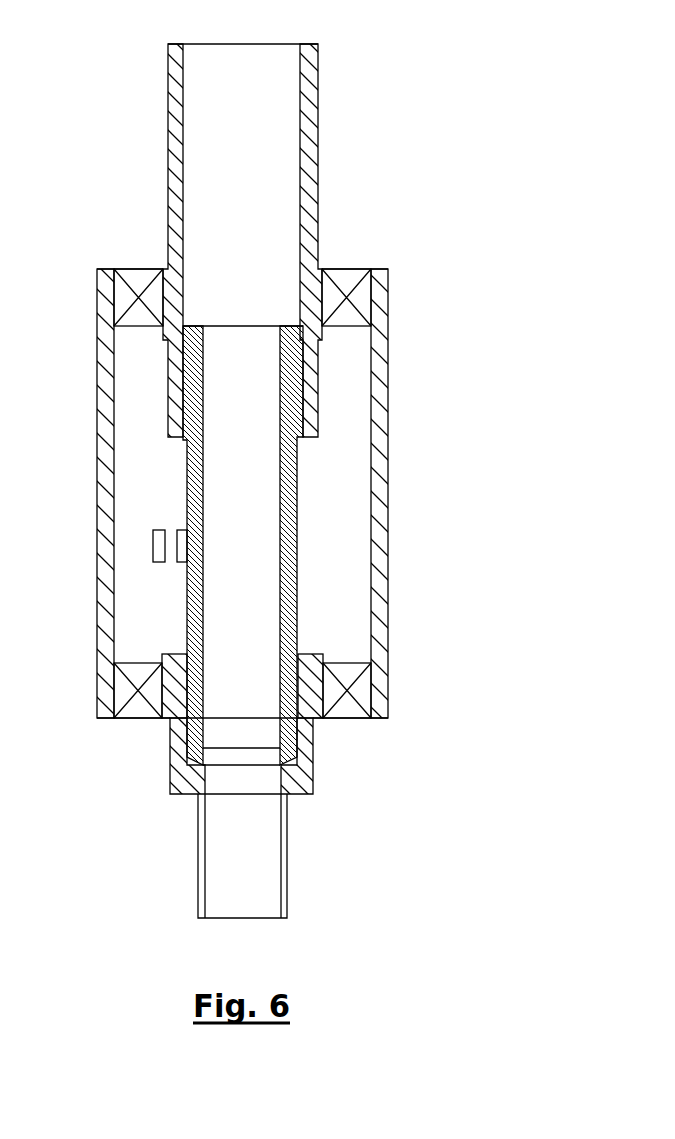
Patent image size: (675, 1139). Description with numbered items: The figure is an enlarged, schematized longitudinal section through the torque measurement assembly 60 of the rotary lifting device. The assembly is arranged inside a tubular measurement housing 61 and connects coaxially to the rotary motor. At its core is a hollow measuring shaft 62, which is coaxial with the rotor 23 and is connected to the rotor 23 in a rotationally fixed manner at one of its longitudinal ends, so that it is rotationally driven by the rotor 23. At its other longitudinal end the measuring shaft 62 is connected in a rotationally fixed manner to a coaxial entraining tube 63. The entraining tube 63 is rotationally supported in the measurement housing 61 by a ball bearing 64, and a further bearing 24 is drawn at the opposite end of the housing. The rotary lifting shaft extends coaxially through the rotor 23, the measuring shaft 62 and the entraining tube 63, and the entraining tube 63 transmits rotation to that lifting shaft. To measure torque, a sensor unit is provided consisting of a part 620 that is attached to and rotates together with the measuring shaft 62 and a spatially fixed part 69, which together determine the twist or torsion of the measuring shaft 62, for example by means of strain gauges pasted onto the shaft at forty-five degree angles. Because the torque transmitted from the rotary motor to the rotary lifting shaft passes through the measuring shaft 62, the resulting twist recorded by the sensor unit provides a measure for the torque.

The torque measurement assembly 60 is at (352, 232).
The tubular measurement housing 61 is at (383, 428).
The measuring shaft 62 is at (297, 542).
The entraining tube 63 is at (312, 138).
The ball bearing 64 is at (358, 298).
The lower bearing 24 is at (360, 687).
The rotor 23 is at (287, 838).
The spatially fixed part 69 is at (153, 543).
The part attached to the measuring shaft 620 is at (185, 560).